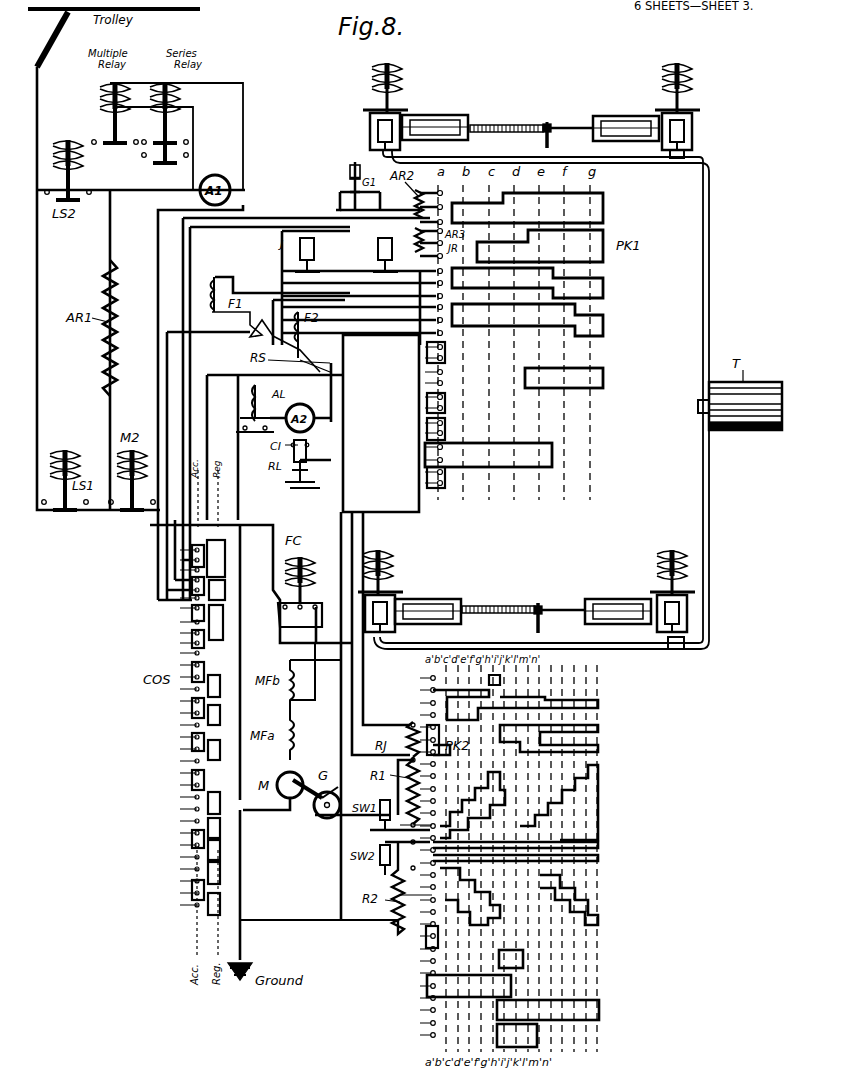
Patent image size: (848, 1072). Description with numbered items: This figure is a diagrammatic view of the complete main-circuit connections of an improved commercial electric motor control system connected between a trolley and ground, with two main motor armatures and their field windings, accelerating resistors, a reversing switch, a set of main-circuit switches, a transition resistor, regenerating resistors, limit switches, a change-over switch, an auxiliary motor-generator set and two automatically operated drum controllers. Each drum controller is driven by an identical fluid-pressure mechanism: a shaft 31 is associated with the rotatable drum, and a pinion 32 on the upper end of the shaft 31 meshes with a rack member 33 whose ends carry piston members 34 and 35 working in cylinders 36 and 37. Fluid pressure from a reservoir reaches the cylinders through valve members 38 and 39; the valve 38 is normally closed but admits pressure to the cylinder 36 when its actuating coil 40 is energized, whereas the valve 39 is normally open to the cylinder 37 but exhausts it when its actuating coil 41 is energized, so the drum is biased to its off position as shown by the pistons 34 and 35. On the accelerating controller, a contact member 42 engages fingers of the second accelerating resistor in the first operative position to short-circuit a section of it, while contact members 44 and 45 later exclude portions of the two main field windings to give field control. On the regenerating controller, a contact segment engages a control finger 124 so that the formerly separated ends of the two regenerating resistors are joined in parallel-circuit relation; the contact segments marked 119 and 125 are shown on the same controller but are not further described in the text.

The shaft 31 is at (549, 140).
The pinion 32 is at (549, 125).
The rack member 33 is at (508, 126).
The piston member 34 is at (416, 120).
The piston member 35 is at (605, 116).
The cylinder 36 is at (438, 116).
The cylinder 37 is at (626, 116).
The valve member 38 is at (368, 125).
The valve member 39 is at (692, 128).
The actuating coil 40 is at (392, 72).
The actuating coil 41 is at (685, 74).
The contact member 42 is at (527, 208).
The contact member 44 is at (527, 283).
The contact member 45 is at (527, 320).
The contact segment 119 is at (515, 697).
The control finger 124 is at (515, 851).
The contact segment 125 is at (519, 802).